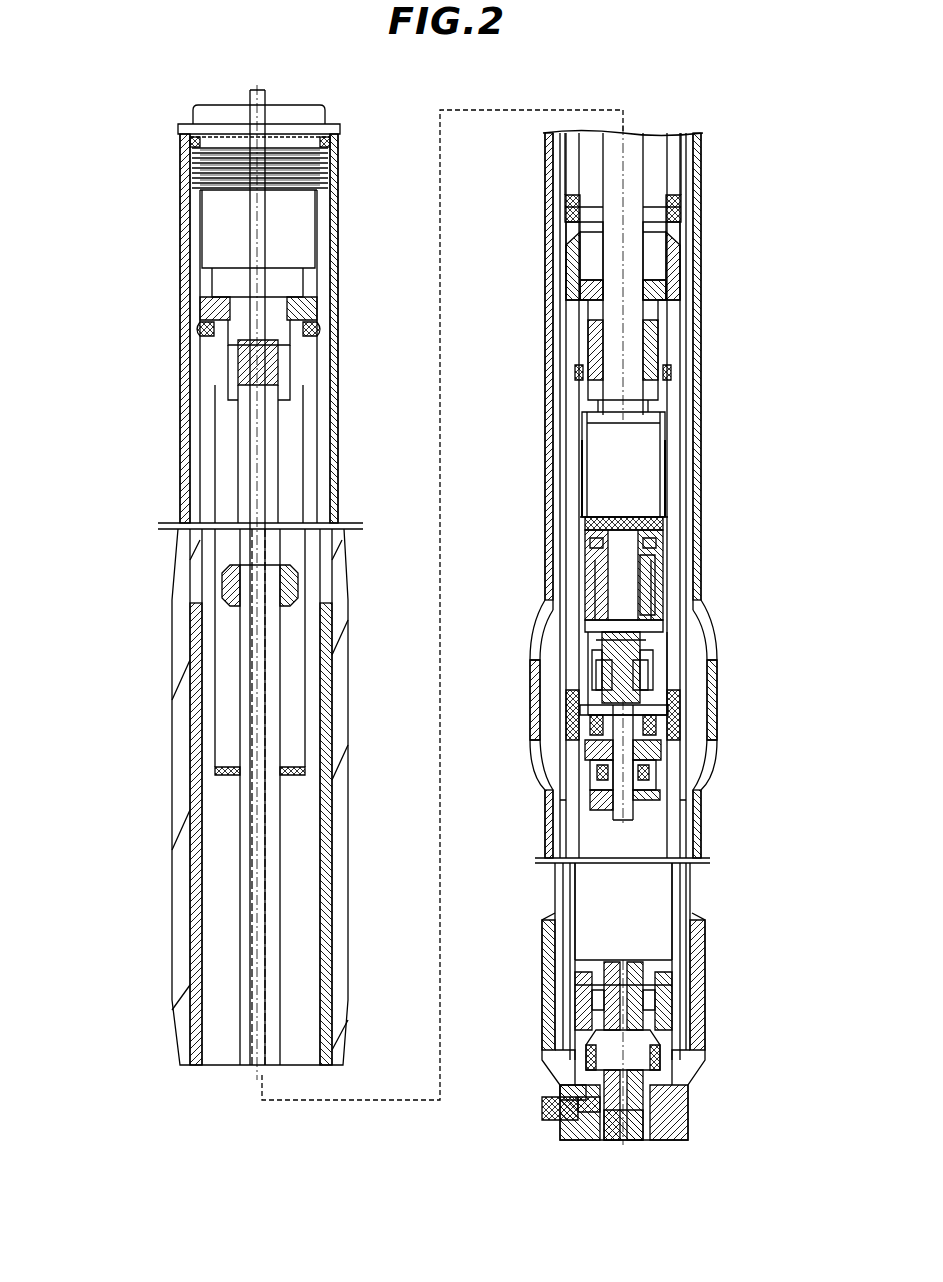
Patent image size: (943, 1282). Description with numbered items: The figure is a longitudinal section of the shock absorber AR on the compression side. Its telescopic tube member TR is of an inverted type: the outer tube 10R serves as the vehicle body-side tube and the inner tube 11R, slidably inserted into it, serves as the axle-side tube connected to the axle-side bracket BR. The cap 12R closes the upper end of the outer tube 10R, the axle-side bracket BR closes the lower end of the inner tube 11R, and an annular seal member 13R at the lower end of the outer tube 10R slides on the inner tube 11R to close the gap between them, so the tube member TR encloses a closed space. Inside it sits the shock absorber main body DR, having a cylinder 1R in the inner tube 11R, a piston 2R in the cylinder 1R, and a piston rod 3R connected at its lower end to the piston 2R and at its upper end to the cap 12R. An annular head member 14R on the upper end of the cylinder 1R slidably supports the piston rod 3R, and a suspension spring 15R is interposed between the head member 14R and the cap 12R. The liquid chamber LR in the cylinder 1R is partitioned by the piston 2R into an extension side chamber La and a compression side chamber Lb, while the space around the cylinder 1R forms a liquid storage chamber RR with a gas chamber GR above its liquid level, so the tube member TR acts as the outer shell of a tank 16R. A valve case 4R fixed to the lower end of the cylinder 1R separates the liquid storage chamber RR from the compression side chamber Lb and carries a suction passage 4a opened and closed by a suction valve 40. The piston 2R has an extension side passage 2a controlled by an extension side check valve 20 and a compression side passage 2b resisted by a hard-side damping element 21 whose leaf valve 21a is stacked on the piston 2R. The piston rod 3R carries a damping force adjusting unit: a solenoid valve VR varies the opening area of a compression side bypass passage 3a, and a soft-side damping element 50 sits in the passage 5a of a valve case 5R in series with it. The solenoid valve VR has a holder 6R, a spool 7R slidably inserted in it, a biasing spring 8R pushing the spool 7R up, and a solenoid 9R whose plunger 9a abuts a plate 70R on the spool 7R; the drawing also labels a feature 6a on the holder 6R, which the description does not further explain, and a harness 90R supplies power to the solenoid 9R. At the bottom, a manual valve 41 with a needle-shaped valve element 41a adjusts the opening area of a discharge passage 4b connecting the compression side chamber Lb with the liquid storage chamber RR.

The shock absorber on the compression side AR is at (159, 155).
The cap 12R is at (340, 168).
The outer tube 10R is at (338, 470).
The gas chamber GR is at (220, 636).
The liquid storage chamber RR is at (223, 883).
The tube member TR is at (180, 1008).
The tank 16R is at (266, 550).
The piston rod 3R is at (276, 988).
The suspension spring 15R is at (681, 192).
The head member 14R is at (700, 288).
The harness 90R is at (608, 330).
The extension side chamber La is at (578, 385).
The shock absorber main body DR is at (680, 362).
The solenoid 9R is at (665, 440).
The plunger 9a is at (650, 492).
The plate 70R is at (598, 528).
The piston passage 6a is at (598, 553).
The solenoid valve VR is at (660, 548).
The holder 6R is at (612, 590).
The spool 7R is at (665, 582).
The biasing spring 8R is at (600, 626).
The compression side bypass passage 3a is at (672, 632).
The soft-side damping element 50 is at (618, 652).
The valve case 5R is at (660, 672).
The passage 5a is at (590, 682).
The leaf valve 21a is at (592, 742).
The hard-side damping element 21 is at (658, 738).
The extension side passage 2a is at (588, 762).
The seal member 13R is at (690, 752).
The piston 2R is at (588, 776).
The compression side passage 2b is at (645, 768).
The extension side check valve 20 is at (600, 792).
The liquid chamber LR is at (582, 844).
The inner tube 11R is at (693, 842).
The cylinder 1R is at (572, 890).
The compression side chamber Lb is at (632, 915).
The axle-side bracket BR is at (705, 937).
The suction valve 40 is at (605, 972).
The suction passage 4a is at (592, 986).
The valve case 4R is at (688, 990).
The valve element 41a is at (566, 1090).
The discharge passage 4b is at (682, 1062).
The manual valve 41 is at (535, 1110).